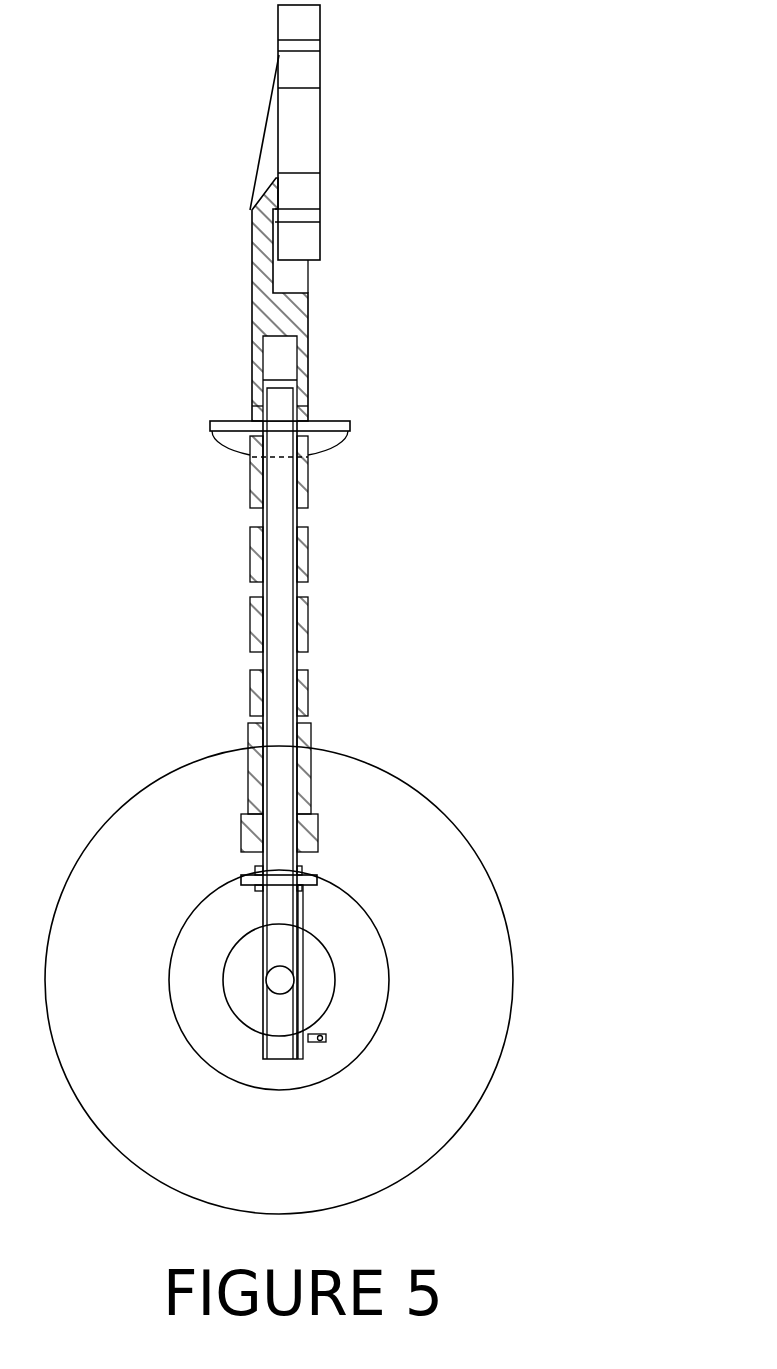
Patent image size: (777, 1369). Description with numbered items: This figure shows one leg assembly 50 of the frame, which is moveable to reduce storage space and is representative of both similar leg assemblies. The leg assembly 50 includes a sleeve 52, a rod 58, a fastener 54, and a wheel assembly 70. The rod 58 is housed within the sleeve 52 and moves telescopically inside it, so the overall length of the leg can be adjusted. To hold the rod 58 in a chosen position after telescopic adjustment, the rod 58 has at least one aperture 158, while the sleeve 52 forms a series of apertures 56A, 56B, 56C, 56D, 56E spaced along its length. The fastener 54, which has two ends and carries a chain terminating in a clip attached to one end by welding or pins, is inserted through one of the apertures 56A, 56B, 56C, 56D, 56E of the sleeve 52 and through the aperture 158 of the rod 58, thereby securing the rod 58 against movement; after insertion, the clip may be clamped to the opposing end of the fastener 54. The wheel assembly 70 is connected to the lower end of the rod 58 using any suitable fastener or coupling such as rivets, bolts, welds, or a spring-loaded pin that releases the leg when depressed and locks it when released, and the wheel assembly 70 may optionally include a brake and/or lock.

The leg assembly 50 is at (524, 350).
The sleeve 52 is at (307, 351).
The fastener 54 is at (226, 421).
The aperture 56A is at (305, 720).
The aperture 56B is at (303, 666).
The aperture 56C is at (303, 592).
The aperture 56D is at (303, 520).
The aperture 56E is at (303, 418).
The rod 58 is at (305, 548).
The wheel assembly 70 is at (398, 852).
The aperture 158 is at (335, 440).